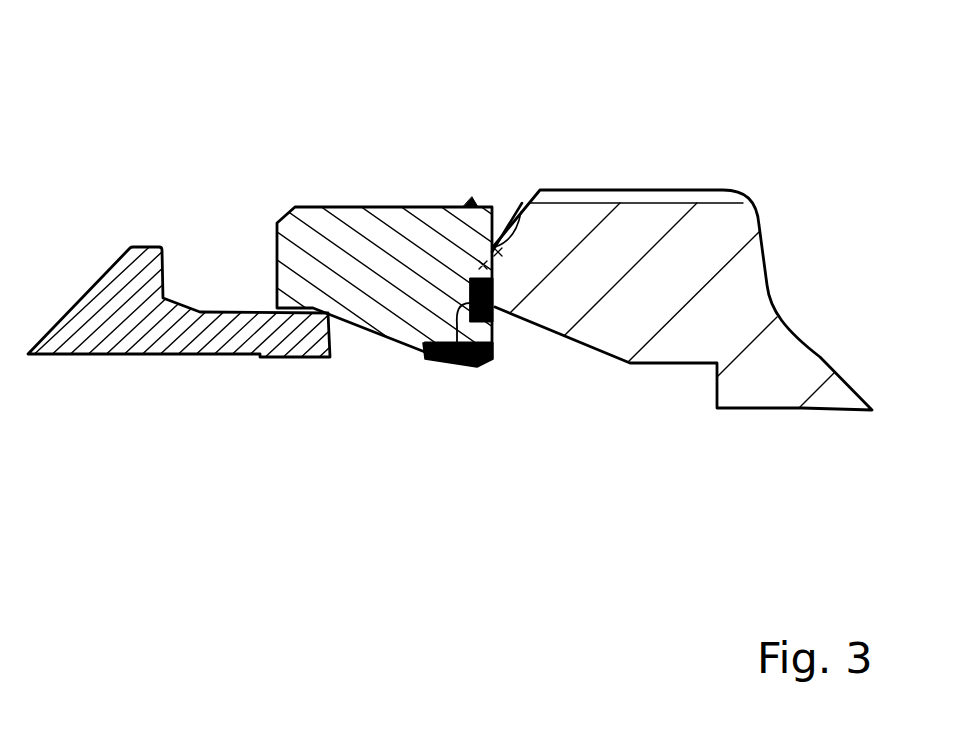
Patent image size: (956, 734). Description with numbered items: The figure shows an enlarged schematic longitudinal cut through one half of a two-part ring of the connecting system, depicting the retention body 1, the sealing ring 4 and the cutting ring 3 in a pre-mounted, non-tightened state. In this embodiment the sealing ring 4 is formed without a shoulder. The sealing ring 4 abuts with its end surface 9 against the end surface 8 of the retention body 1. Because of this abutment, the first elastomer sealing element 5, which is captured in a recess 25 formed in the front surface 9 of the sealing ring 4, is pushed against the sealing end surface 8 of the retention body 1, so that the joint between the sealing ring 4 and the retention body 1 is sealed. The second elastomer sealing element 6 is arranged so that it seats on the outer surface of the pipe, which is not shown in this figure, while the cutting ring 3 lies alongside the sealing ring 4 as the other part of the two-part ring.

The retention body 1 is at (625, 237).
The cutting ring 3 is at (135, 268).
The sealing ring 4 is at (310, 207).
The first elastomer sealing element 5 is at (468, 277).
The second elastomer sealing element 6 is at (435, 343).
The end surface of the retention body 8 is at (475, 197).
The end surface of the sealing ring 9 is at (524, 204).
The recess 25 is at (453, 365).